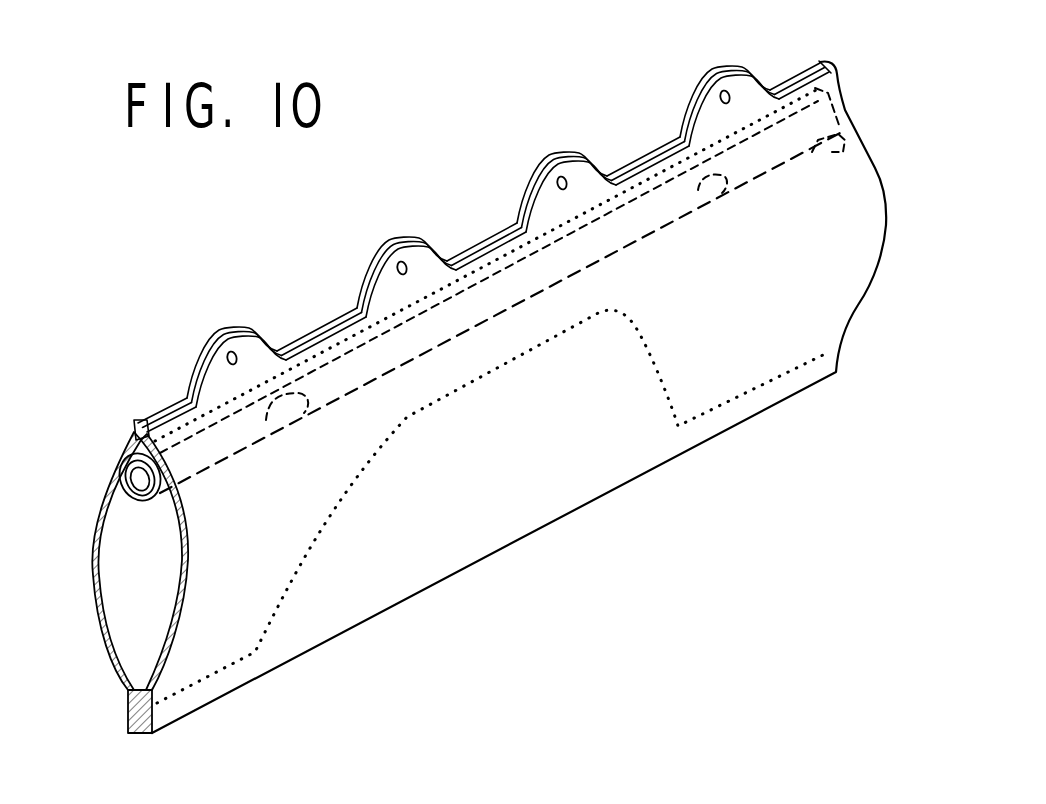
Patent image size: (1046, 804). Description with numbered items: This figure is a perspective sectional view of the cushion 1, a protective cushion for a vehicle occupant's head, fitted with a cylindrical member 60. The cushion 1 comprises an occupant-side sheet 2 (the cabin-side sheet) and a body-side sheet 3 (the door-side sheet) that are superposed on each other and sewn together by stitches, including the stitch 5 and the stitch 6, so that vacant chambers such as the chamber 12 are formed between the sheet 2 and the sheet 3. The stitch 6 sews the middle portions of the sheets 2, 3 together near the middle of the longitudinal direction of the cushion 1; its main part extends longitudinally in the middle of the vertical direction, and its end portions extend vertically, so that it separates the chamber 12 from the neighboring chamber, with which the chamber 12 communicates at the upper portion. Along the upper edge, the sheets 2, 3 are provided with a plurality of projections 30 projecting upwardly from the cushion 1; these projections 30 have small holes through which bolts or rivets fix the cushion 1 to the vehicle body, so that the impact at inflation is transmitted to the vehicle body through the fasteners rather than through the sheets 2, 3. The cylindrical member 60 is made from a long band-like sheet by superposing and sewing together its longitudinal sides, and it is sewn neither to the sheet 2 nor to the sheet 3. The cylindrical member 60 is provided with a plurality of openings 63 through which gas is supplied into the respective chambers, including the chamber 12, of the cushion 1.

The cushion 1 is at (489, 114).
The occupant-side sheet 2 is at (162, 626).
The body-side sheet 3 is at (118, 566).
The stitch 5 is at (316, 352).
The stitch 6 is at (417, 406).
The chamber 12 is at (133, 640).
The projection 30 is at (226, 326).
The cylindrical member 60 is at (120, 482).
The opening 63 is at (273, 418).